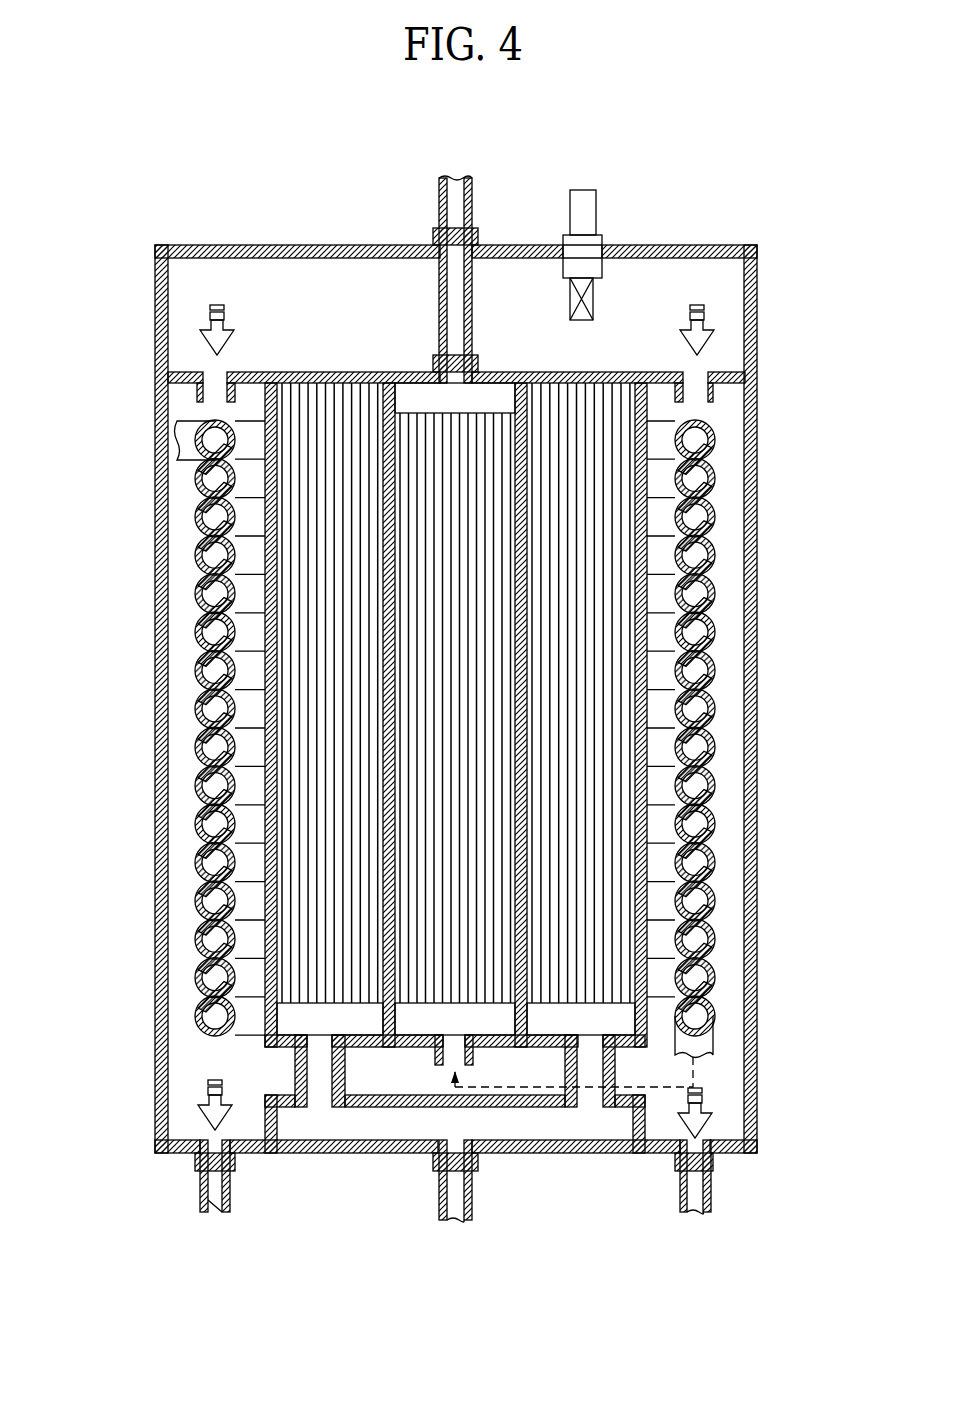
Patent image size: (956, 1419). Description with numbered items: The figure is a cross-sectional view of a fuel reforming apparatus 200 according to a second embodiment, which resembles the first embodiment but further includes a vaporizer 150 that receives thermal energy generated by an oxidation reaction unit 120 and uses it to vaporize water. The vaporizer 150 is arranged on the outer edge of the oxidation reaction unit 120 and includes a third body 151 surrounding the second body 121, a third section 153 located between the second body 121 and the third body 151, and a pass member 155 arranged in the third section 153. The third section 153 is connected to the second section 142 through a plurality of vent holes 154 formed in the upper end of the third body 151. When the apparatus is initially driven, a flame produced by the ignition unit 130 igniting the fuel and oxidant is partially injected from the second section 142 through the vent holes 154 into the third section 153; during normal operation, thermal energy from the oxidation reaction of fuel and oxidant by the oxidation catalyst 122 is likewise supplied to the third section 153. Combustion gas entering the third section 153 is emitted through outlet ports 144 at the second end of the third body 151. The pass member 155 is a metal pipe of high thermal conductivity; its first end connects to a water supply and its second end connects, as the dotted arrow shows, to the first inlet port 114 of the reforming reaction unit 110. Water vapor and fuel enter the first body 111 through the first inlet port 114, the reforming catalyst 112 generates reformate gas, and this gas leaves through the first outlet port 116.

The fuel reforming apparatus 200 is at (475, 149).
The reforming reaction unit 110 is at (380, 737).
The first body 111 is at (527, 537).
The reforming catalyst 112 is at (506, 580).
The first inlet port 114 is at (435, 1092).
The first outlet port 116 is at (435, 358).
The oxidation reaction unit 120 is at (840, 685).
The second body 121 is at (647, 742).
The oxidation catalyst 122 is at (629, 708).
The ignition unit 130 is at (614, 268).
The second section 142 is at (183, 277).
The outlet ports 144 is at (195, 1160).
The vaporizer 150 is at (150, 852).
The third body 151 is at (155, 965).
The third section 153 is at (187, 903).
The vent holes 154 is at (197, 395).
The pass member 155 is at (197, 670).